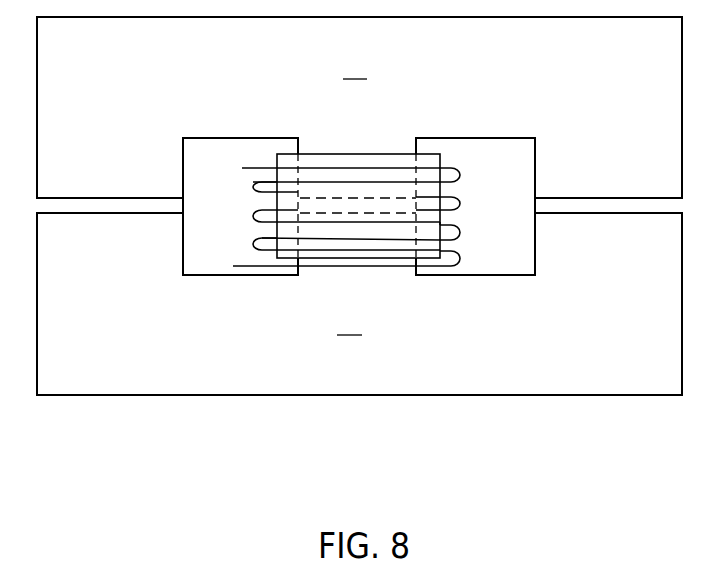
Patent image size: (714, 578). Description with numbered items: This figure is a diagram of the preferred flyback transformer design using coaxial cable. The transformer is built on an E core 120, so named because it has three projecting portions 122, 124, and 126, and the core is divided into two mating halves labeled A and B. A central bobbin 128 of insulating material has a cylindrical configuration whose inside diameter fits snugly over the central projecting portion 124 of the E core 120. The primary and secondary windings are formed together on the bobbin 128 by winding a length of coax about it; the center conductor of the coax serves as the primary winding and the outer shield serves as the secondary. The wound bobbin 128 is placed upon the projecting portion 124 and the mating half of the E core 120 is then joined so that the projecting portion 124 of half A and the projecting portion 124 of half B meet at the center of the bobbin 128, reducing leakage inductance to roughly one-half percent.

The E core 120 is at (540, 380).
The projecting portion 122 is at (103, 257).
The central projecting portion 124 is at (262, 236).
The projecting portion 126 is at (615, 257).
The central bobbin 128 is at (432, 158).